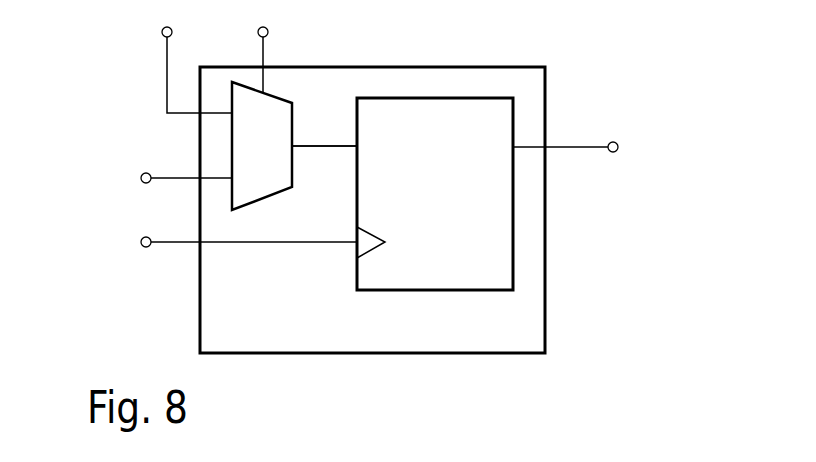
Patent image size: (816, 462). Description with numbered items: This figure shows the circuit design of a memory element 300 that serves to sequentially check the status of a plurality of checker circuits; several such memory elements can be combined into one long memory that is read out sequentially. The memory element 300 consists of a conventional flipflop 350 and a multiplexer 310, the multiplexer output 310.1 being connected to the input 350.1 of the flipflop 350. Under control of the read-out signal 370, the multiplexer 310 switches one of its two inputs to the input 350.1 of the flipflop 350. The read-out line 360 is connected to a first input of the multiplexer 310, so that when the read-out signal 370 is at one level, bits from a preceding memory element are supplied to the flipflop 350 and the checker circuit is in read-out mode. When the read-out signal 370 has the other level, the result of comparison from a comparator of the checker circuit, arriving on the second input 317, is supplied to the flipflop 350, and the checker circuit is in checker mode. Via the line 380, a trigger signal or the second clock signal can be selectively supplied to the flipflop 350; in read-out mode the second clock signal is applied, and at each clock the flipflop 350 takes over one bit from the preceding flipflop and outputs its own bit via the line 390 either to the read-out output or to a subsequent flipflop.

The memory element 300 is at (568, 339).
The multiplexer 310 is at (247, 208).
The multiplexer output 310.1 is at (302, 140).
The data input 317 is at (168, 175).
The flipflop 350 is at (533, 244).
The input of flipflop 350.1 is at (350, 151).
The read-out line 360 is at (163, 60).
The read-out signal 370 is at (265, 53).
The line 380 is at (170, 244).
The line 390 is at (578, 147).